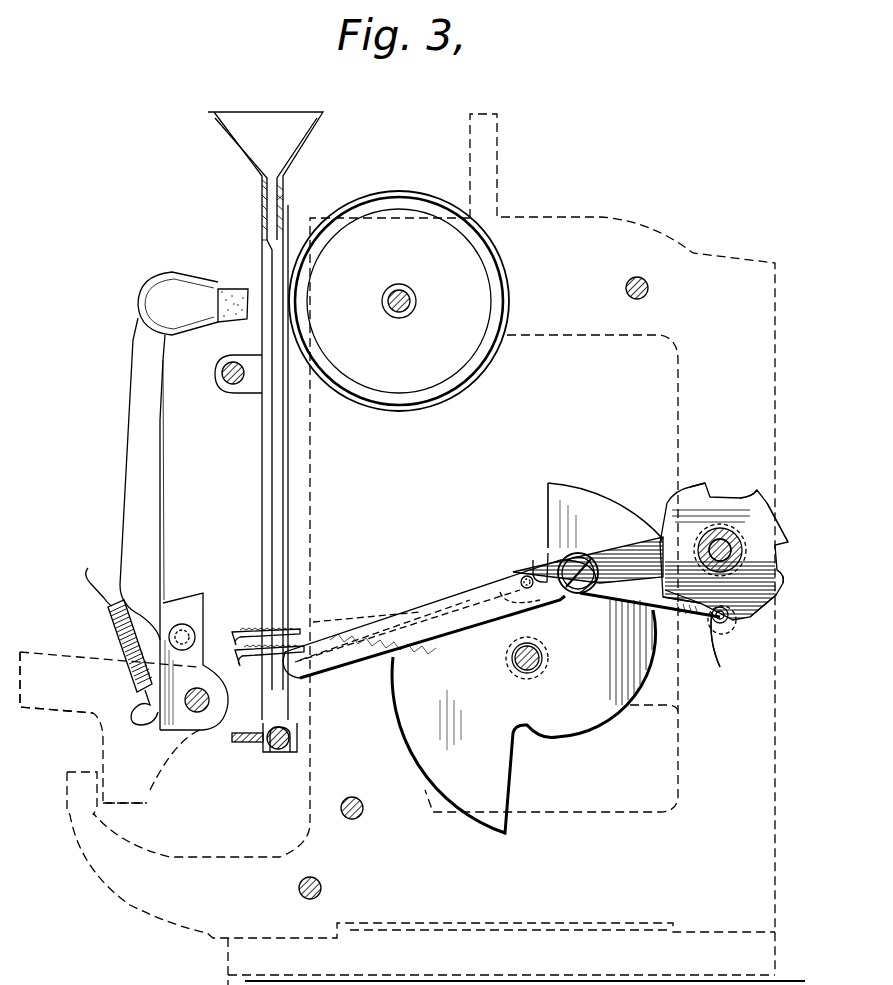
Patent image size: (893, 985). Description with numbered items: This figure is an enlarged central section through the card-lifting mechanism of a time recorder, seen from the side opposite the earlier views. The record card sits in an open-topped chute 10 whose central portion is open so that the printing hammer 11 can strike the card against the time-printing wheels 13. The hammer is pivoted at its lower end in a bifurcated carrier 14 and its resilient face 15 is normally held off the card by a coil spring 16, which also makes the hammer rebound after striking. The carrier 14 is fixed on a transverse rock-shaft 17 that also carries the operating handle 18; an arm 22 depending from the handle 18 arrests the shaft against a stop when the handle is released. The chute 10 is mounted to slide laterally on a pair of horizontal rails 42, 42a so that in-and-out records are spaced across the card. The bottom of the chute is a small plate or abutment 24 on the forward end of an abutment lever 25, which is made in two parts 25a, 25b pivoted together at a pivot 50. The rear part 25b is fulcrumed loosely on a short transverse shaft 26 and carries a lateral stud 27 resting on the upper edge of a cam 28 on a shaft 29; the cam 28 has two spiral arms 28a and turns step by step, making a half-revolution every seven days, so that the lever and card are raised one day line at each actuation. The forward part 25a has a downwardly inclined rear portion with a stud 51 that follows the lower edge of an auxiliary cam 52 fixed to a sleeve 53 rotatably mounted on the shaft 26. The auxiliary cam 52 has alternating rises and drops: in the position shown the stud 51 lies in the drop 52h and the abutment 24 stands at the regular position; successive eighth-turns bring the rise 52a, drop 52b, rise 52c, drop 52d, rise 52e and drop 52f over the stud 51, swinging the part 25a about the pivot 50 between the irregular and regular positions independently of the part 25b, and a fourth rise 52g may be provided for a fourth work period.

The chute 10 is at (290, 120).
The printing hammer 11 is at (135, 399).
The time-printing wheels 13 is at (405, 202).
The bifurcated carrier 14 is at (198, 609).
The resilient face 15 is at (232, 292).
The coil spring 16 is at (108, 628).
The transverse rock-shaft 17 is at (197, 713).
The operating handle 18 is at (63, 705).
The arm 22 is at (149, 790).
The abutment 24 is at (240, 660).
The abutment lever 25 is at (355, 665).
The lever part 25a is at (384, 625).
The lever part 25b is at (533, 560).
The transverse shaft 26 is at (718, 537).
The lateral stud 27 is at (523, 575).
The cam 28 is at (527, 658).
The spiral arms 28a is at (568, 505).
The shaft 29 is at (543, 659).
The horizontal rail 42 is at (240, 385).
The horizontal rail 42a is at (278, 750).
The pivot 50 is at (575, 565).
The stud 51 is at (728, 622).
The auxiliary cam 52 is at (715, 500).
The rise 52a is at (663, 623).
The drop 52b is at (665, 535).
The rise 52c is at (692, 483).
The drop 52d is at (753, 490).
The rise 52e is at (780, 523).
The drop 52f is at (780, 585).
The rise 52g is at (747, 613).
The drop 52h is at (731, 647).
The sleeve 53 is at (742, 541).